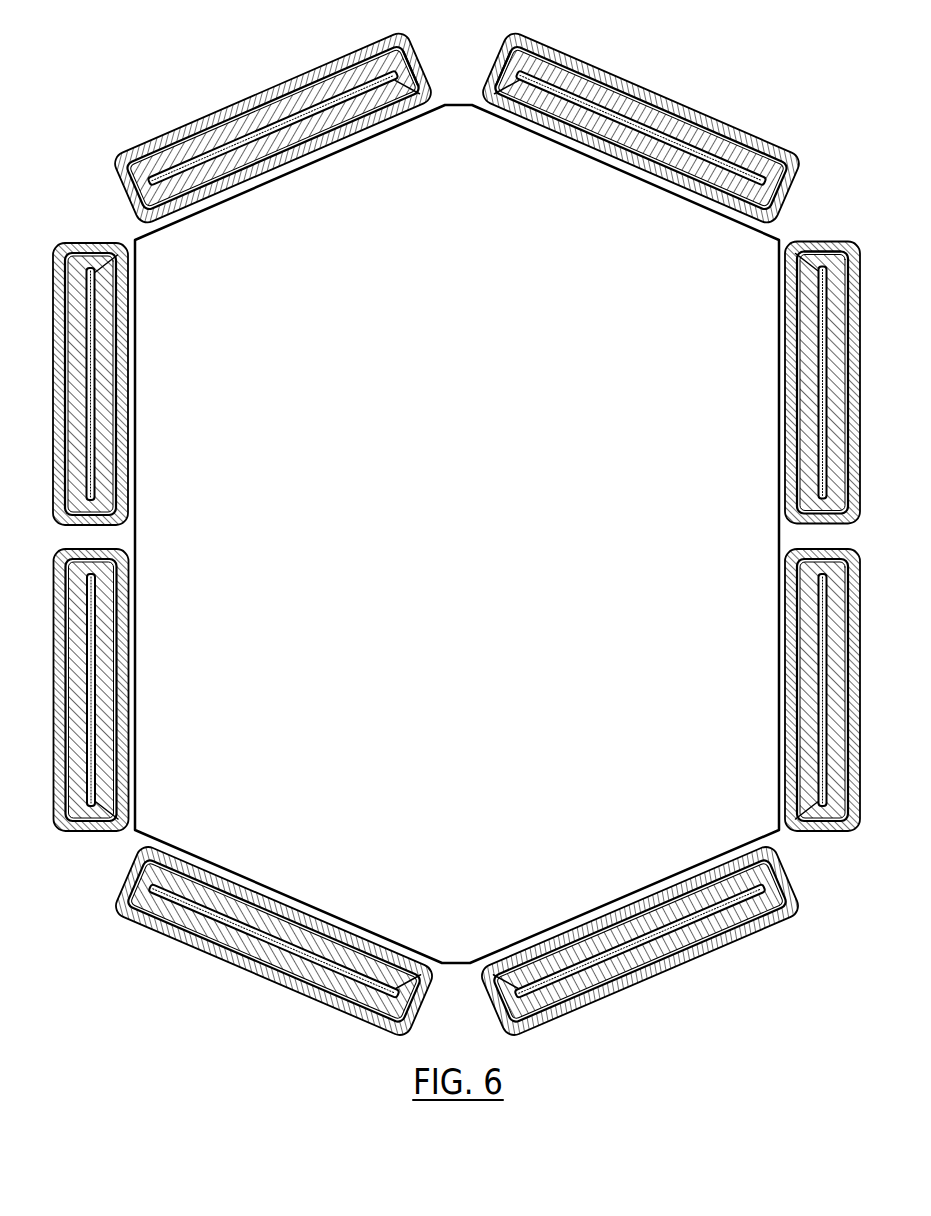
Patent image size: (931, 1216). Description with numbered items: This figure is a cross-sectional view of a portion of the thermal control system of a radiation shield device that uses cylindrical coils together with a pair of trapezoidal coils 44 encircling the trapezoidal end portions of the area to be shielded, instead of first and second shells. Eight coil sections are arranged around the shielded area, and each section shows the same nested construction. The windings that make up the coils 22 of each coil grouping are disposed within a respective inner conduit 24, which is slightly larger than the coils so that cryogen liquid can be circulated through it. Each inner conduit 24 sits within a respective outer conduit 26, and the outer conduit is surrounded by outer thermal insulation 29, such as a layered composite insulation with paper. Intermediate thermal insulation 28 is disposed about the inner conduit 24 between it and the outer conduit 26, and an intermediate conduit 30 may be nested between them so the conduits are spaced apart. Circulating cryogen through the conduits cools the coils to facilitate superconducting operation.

The coils 22 is at (197, 174).
The inner conduit 24 is at (343, 108).
The outer conduit 26 is at (408, 101).
The intermediate thermal insulation 28 is at (280, 140).
The outer thermal insulation 29 is at (238, 181).
The intermediate conduit 30 is at (446, 106).
The trapezoidal coils 44 is at (354, 50).